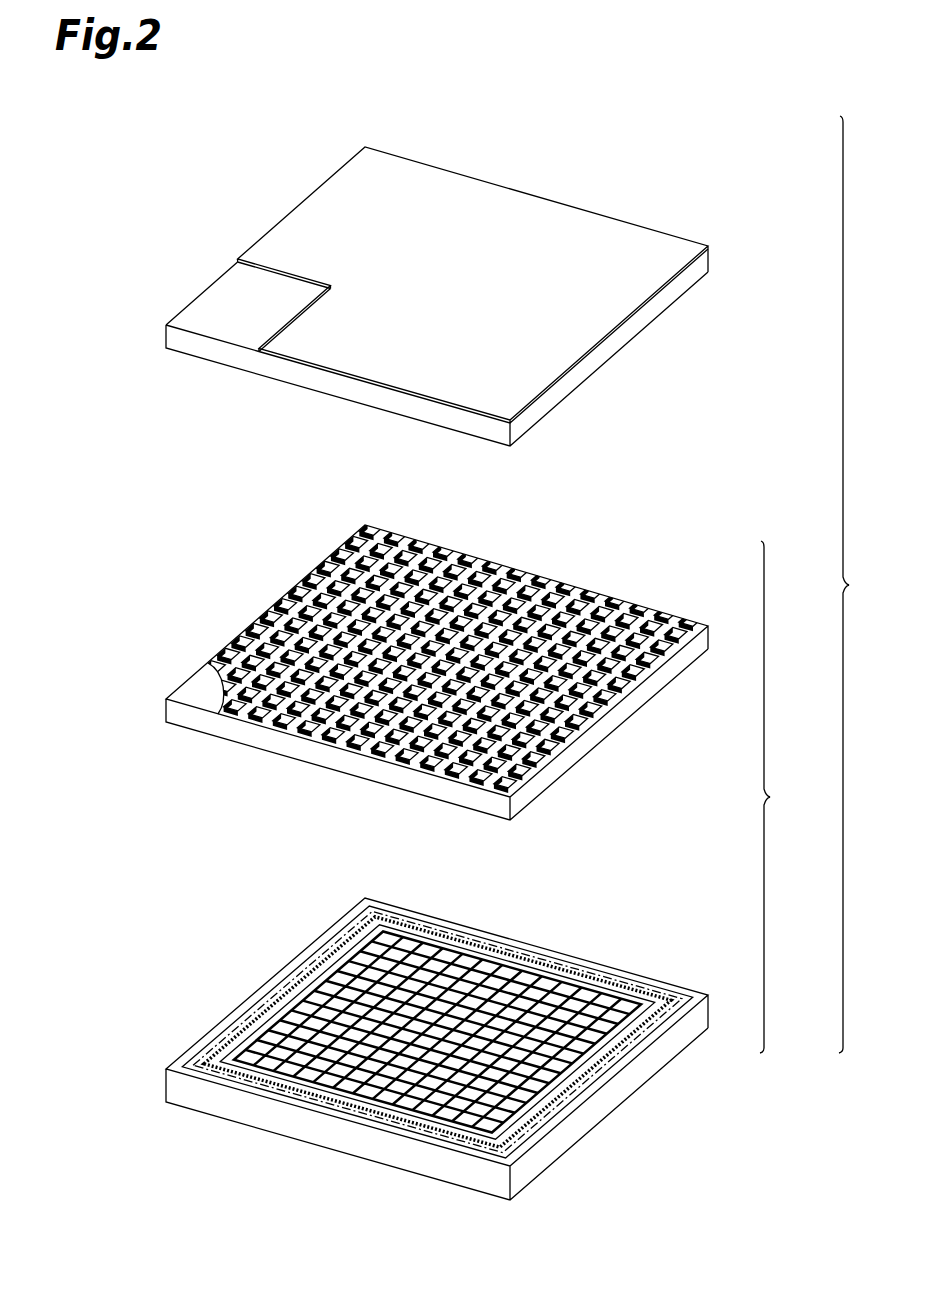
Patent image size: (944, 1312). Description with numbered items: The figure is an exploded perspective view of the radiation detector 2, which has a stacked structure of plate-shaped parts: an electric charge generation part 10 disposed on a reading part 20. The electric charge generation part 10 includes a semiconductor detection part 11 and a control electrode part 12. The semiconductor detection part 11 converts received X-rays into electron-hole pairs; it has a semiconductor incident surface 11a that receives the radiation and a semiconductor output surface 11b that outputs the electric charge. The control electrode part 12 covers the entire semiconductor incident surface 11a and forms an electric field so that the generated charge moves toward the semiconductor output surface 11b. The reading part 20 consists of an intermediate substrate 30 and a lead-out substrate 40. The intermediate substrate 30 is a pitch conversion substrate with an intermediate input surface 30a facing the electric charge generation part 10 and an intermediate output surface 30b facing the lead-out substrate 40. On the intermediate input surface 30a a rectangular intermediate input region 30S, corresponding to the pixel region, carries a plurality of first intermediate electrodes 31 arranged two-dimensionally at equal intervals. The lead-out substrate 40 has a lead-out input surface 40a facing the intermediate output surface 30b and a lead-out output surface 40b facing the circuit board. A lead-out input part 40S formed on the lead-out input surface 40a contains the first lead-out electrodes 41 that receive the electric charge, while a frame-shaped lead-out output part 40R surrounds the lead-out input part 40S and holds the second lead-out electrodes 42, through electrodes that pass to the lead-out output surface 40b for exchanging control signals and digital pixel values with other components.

The radiation detector 2 is at (855, 584).
The electric charge generation part 10 is at (418, 282).
The semiconductor detection part 11 is at (418, 347).
The semiconductor incident surface 11a is at (200, 318).
The semiconductor output surface 11b is at (200, 359).
The control electrode part 12 is at (238, 259).
The reading part 20 is at (785, 797).
The intermediate substrate 30 is at (424, 656).
The intermediate input surface 30a is at (196, 693).
The intermediate input region 30S is at (216, 688).
The intermediate output surface 30b is at (188, 728).
The first intermediate electrodes 31 is at (690, 624).
The lead-out substrate 40 is at (410, 1027).
The lead-out input part 40S is at (378, 915).
The lead-out output part 40R is at (233, 1020).
The lead-out input surface 40a is at (170, 1068).
The lead-out output surface 40b is at (184, 1107).
The first lead-out electrodes 41 is at (542, 976).
The second lead-out electrodes 42 is at (634, 981).